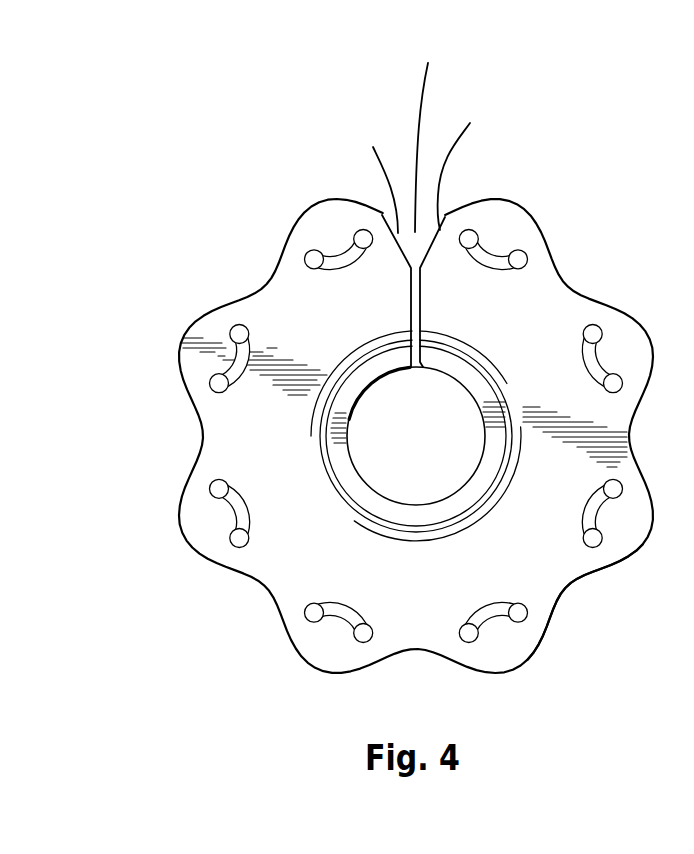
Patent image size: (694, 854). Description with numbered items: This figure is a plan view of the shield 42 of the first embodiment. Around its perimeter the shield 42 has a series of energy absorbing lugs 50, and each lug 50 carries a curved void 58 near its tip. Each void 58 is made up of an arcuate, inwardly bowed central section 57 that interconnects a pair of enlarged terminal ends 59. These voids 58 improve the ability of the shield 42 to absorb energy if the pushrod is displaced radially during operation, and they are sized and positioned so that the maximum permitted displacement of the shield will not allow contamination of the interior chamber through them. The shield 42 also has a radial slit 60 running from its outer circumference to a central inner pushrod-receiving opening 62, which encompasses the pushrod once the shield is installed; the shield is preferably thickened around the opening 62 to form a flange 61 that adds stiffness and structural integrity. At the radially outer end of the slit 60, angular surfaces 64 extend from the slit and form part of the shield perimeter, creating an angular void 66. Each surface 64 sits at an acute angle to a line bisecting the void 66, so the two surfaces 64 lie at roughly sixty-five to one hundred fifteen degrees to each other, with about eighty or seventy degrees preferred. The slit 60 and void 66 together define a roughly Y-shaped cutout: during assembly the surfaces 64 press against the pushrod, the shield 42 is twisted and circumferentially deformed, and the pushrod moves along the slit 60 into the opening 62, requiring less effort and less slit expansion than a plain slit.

The shield 42 is at (565, 280).
The energy absorbing lug 50 is at (518, 665).
The central section 57 is at (177, 532).
The curved void 58 is at (335, 618).
The enlarged terminal end 59 is at (240, 538).
The radial slit 60 is at (413, 366).
The flange 61 is at (487, 475).
The central inner pushrod-receiving opening 62 is at (400, 502).
The angular surface 64 is at (422, 160).
The angular void 66 is at (432, 125).